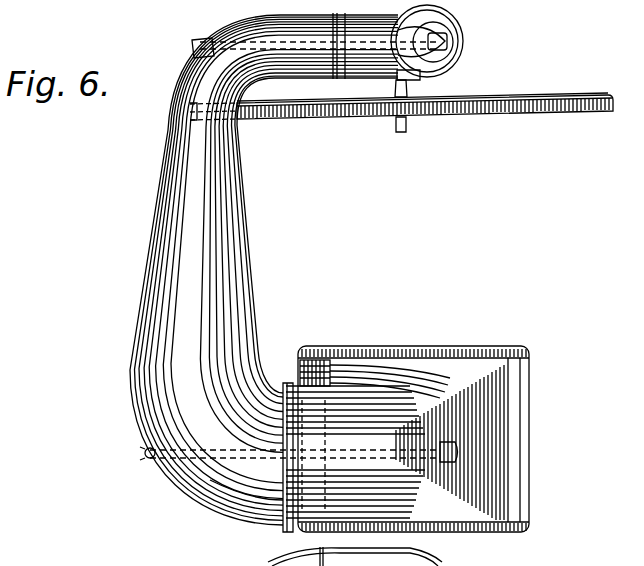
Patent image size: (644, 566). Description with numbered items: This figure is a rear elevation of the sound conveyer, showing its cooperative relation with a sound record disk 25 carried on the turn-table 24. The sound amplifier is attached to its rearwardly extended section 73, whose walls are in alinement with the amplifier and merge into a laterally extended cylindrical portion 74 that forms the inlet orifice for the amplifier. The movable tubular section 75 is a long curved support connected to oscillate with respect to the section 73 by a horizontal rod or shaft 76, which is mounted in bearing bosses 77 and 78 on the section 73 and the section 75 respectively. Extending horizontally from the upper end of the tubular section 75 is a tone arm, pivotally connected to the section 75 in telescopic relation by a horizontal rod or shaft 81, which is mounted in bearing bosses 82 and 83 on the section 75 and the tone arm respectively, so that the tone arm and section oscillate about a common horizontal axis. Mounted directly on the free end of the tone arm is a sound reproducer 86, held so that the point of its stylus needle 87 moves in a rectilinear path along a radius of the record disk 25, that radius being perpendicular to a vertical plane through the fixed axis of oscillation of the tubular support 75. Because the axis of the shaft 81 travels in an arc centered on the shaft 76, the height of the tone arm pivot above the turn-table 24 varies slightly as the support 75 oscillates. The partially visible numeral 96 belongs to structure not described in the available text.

The movable tubular section 75 is at (160, 263).
The horizontal rod or shaft 81 is at (300, 50).
The bearing boss 82 is at (193, 47).
The bearing boss 83 is at (448, 42).
The sound reproducer 86 is at (455, 62).
The stylus needle 87 is at (397, 97).
The turn-table 24 is at (577, 112).
The sound record disk 25 is at (569, 95).
The rearwardly extended section 73 is at (497, 393).
The bearing boss 77 is at (457, 448).
The laterally extended cylindrical portion 74 is at (287, 530).
The horizontal rod or shaft 76 is at (222, 463).
The bearing boss 78 is at (145, 452).
The tube 96 is at (367, 556).